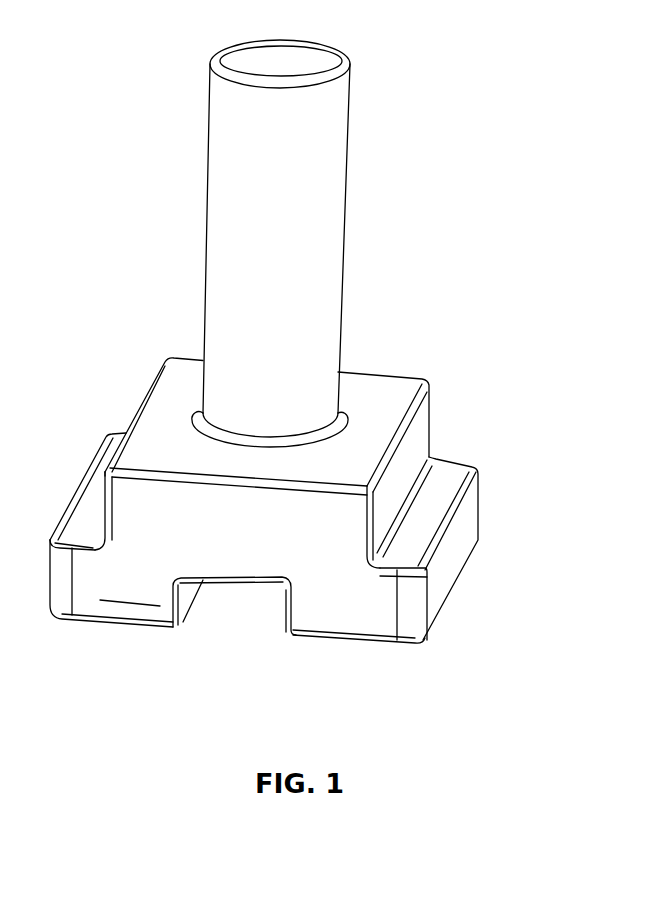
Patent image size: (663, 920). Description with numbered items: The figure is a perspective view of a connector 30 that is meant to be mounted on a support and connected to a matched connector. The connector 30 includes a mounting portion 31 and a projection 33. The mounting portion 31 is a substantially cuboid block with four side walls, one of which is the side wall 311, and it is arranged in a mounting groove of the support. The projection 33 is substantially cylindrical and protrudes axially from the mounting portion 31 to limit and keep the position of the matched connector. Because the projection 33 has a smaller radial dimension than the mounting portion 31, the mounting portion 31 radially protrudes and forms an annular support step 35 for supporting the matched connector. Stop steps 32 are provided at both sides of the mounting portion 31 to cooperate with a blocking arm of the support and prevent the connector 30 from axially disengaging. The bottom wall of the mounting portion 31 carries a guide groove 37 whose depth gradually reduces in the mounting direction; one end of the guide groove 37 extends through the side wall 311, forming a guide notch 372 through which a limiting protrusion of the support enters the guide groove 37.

The connector 30 is at (292, 35).
The mounting portion 31 is at (480, 476).
The side wall 311 is at (140, 600).
The stop step 32 is at (100, 508).
The projection 33 is at (216, 226).
The support step 35 is at (183, 405).
The guide groove 37 is at (204, 606).
The guide notch 372 is at (280, 617).